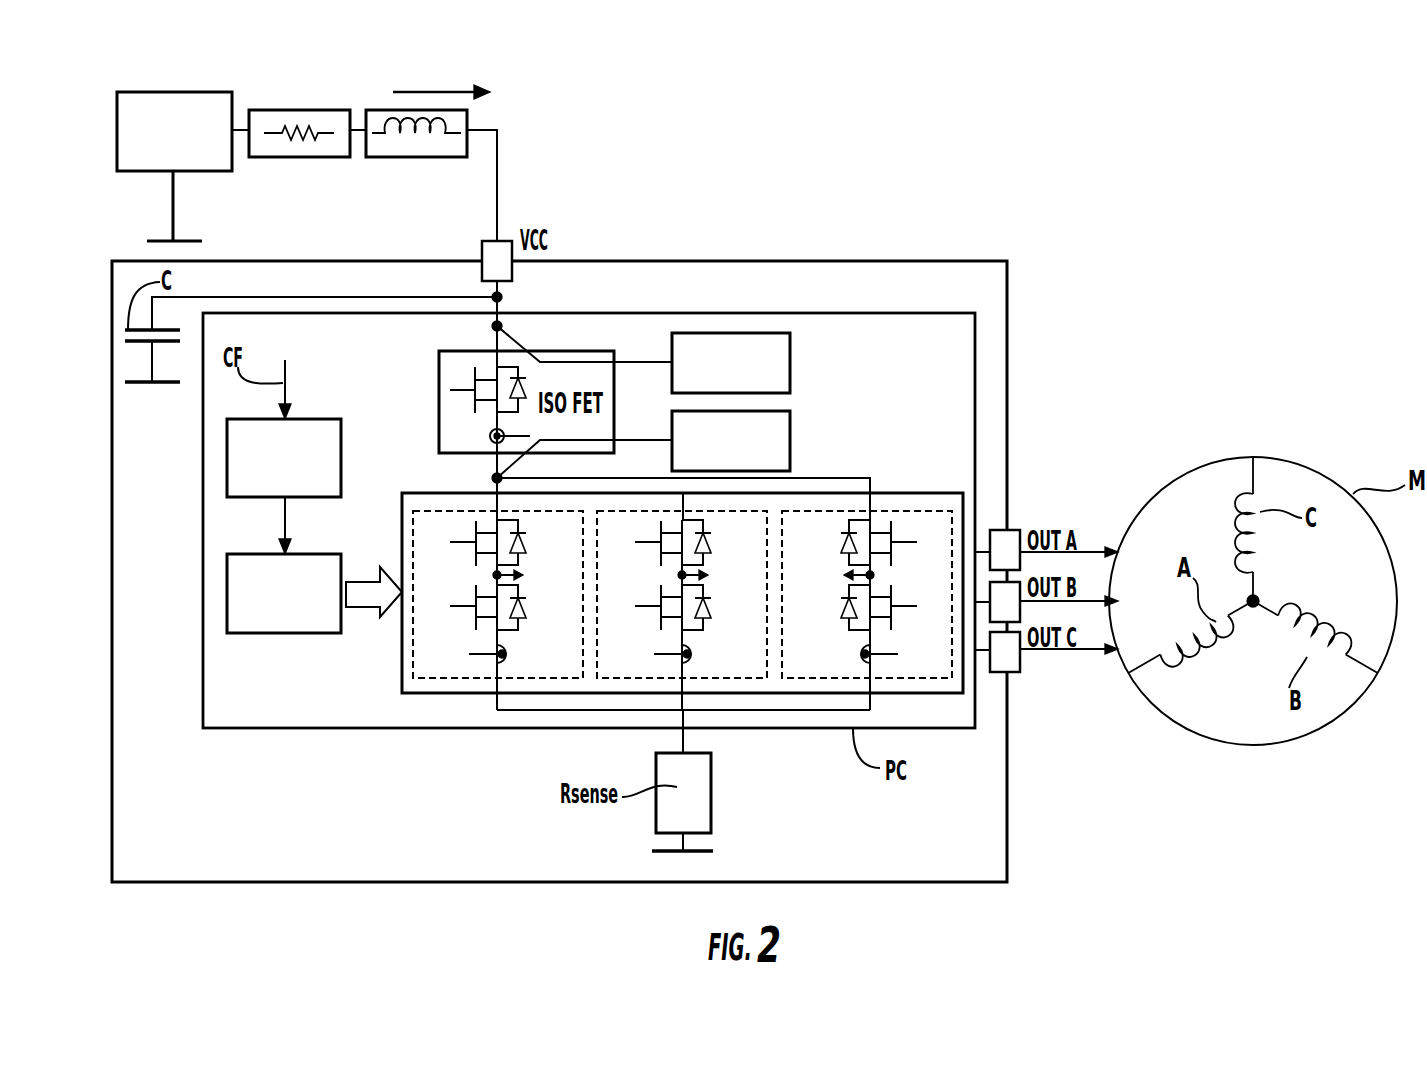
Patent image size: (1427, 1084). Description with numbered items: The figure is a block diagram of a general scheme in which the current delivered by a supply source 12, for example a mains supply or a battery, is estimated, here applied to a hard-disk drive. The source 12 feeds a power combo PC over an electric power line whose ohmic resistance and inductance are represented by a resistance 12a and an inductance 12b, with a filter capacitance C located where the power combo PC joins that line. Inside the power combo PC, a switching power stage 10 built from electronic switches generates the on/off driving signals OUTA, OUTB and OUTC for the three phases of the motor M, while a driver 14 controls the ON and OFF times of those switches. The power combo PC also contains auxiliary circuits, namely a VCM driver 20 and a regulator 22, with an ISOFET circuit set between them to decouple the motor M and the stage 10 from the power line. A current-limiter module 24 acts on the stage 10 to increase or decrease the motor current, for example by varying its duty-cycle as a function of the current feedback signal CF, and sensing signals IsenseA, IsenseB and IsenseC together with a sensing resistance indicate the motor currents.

The power stage 10 is at (428, 694).
The source 12 is at (173, 92).
The resistance 12a is at (302, 157).
The inductance 12b is at (415, 157).
The driver 14 is at (282, 633).
The VCM driver 20 is at (790, 441).
The regulator 22 is at (790, 363).
The current-limiter module 24 is at (313, 418).